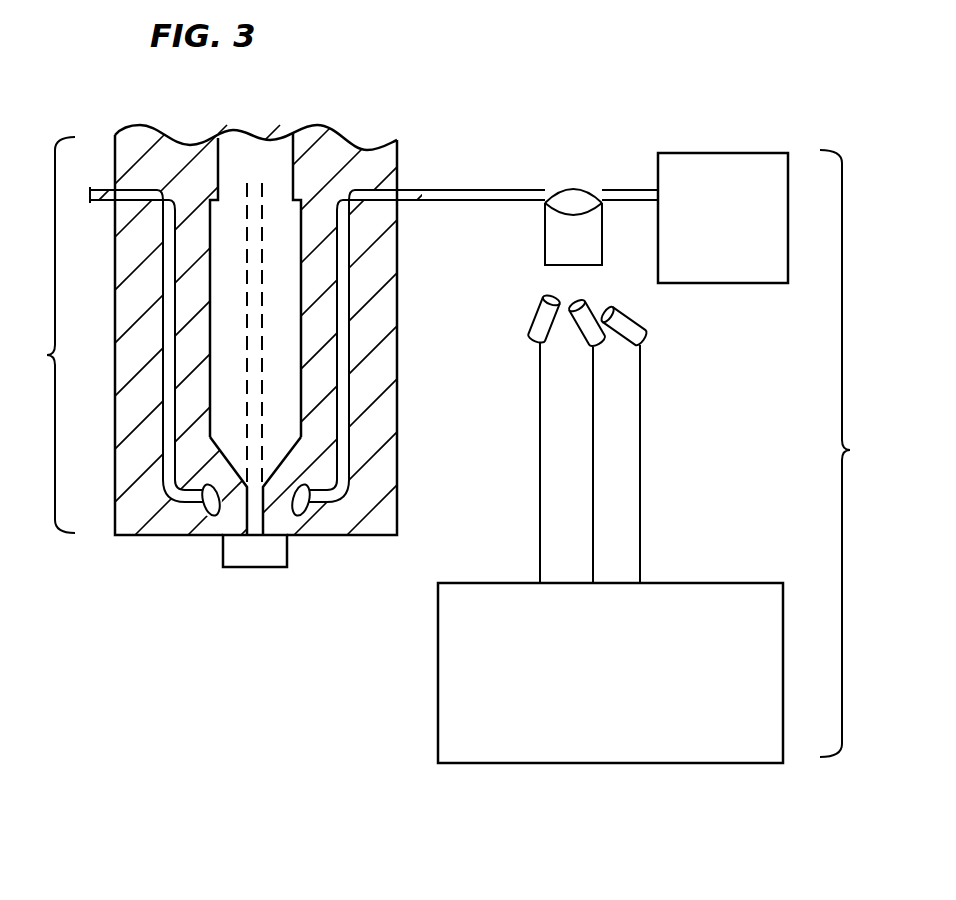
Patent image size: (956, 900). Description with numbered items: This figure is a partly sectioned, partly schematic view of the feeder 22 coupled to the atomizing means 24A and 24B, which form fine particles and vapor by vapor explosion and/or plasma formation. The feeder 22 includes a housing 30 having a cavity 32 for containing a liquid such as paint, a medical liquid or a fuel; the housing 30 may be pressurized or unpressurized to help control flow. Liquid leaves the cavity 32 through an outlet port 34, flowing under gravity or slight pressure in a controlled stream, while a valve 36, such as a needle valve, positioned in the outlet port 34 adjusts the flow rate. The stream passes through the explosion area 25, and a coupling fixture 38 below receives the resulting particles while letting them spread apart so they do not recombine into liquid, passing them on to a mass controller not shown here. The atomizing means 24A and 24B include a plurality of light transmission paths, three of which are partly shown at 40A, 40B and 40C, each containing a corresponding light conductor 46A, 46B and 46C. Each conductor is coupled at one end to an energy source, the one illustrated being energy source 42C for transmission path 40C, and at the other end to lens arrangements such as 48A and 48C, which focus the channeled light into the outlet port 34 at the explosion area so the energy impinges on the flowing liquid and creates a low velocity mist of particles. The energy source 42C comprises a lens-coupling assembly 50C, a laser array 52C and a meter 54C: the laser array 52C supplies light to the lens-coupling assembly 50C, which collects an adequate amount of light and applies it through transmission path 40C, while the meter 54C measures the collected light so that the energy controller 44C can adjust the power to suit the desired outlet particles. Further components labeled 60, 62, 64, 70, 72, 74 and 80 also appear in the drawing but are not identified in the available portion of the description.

The feeder 22 is at (352, 128).
The atomizing means 24A is at (860, 453).
The atomizing means 24B is at (41, 335).
The explosion area 25 is at (203, 551).
The housing 30 is at (160, 535).
The cavity 32 is at (272, 240).
The outlet port 34 is at (222, 538).
The valve 36 is at (263, 475).
The coupling fixture 38 is at (288, 560).
The transmission path 40A is at (99, 190).
The transmission path 40B is at (262, 168).
The transmission path 40C is at (398, 191).
The energy source 42C is at (540, 273).
The energy controller 44C is at (773, 678).
The light conductor 46A is at (168, 274).
The light conductor 46B is at (263, 386).
The light conductor 46C is at (347, 357).
The lens arrangement 48A is at (204, 508).
The lens arrangement 48C is at (309, 506).
The lens-coupling assembly 50C is at (580, 179).
The laser array 52C is at (538, 294).
The meter 54C is at (737, 160).
The cell body 60 is at (603, 264).
The cell window 62 is at (563, 191).
The cell window 64 is at (599, 192).
The first lamp 70 is at (534, 332).
The second lamp 72 is at (590, 334).
The third lamp 74 is at (648, 334).
The signal conduit 80 is at (645, 201).